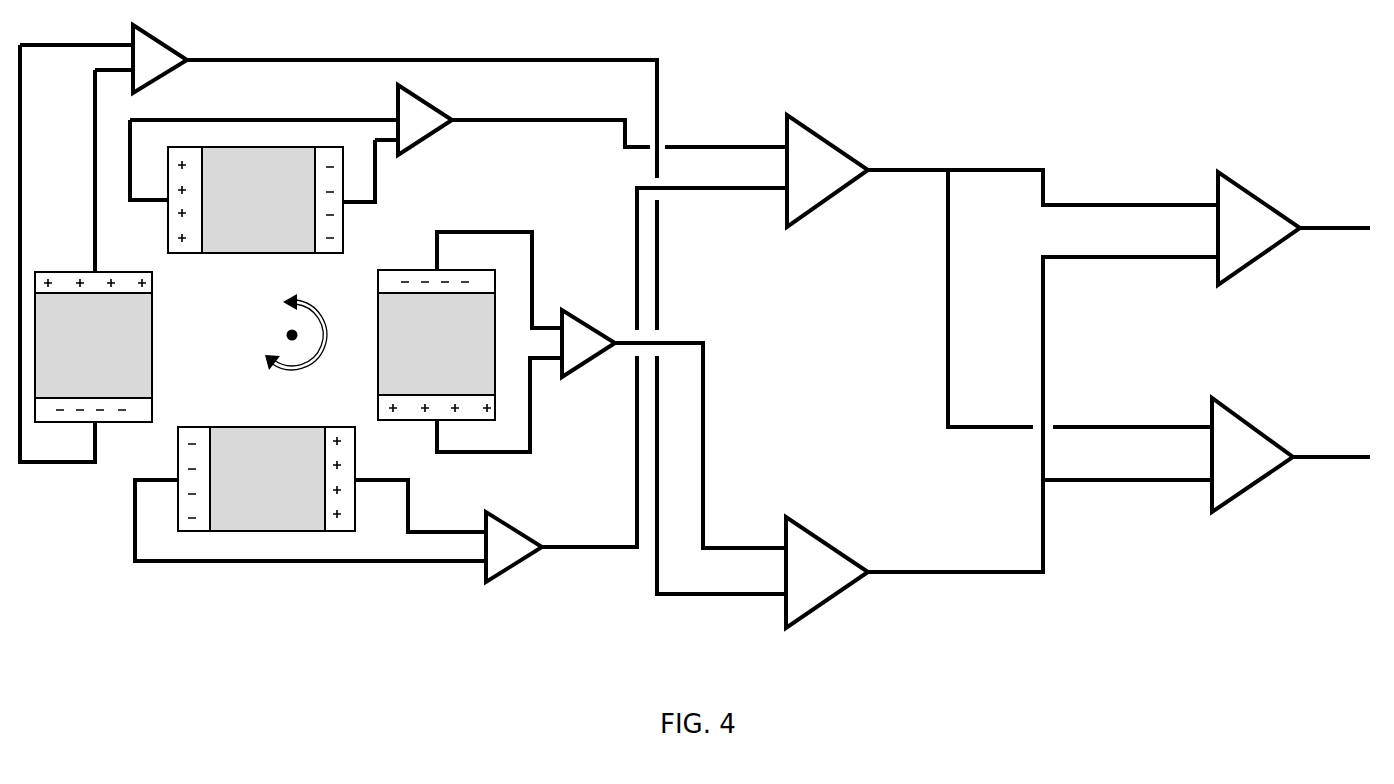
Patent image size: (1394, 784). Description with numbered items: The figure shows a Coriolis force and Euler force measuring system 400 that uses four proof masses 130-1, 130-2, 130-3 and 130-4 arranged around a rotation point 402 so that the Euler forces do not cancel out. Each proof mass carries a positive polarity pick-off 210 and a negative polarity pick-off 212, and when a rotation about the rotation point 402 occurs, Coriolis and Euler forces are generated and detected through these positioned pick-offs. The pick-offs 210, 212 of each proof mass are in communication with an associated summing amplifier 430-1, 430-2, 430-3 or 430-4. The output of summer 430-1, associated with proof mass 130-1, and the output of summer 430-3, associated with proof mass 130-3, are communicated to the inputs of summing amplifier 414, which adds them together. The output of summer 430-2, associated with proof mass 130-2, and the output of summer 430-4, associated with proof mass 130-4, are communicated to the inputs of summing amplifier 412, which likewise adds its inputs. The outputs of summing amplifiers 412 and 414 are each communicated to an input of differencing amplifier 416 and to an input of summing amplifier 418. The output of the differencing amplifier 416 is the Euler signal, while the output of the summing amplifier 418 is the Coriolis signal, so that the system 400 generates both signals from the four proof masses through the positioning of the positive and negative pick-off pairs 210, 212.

The Coriolis force and Euler force measuring system 400 is at (1105, 150).
The rotation point 402 is at (285, 337).
The proof mass 130-1 is at (93, 347).
The proof mass 130-2 is at (255, 200).
The proof mass 130-3 is at (436, 345).
The proof mass 130-4 is at (266, 479).
The positive polarity pick-off 210 is at (180, 253).
The negative polarity pick-off 212 is at (340, 253).
The summing amplifier 430-1 is at (166, 72).
The summing amplifier 430-2 is at (428, 128).
The summing amplifier 430-3 is at (574, 362).
The summing amplifier 430-4 is at (520, 540).
The summing amplifier 412 is at (826, 192).
The summing amplifier 414 is at (826, 588).
The differencing amplifier 416 is at (1264, 238).
The summing amplifier 418 is at (1255, 468).